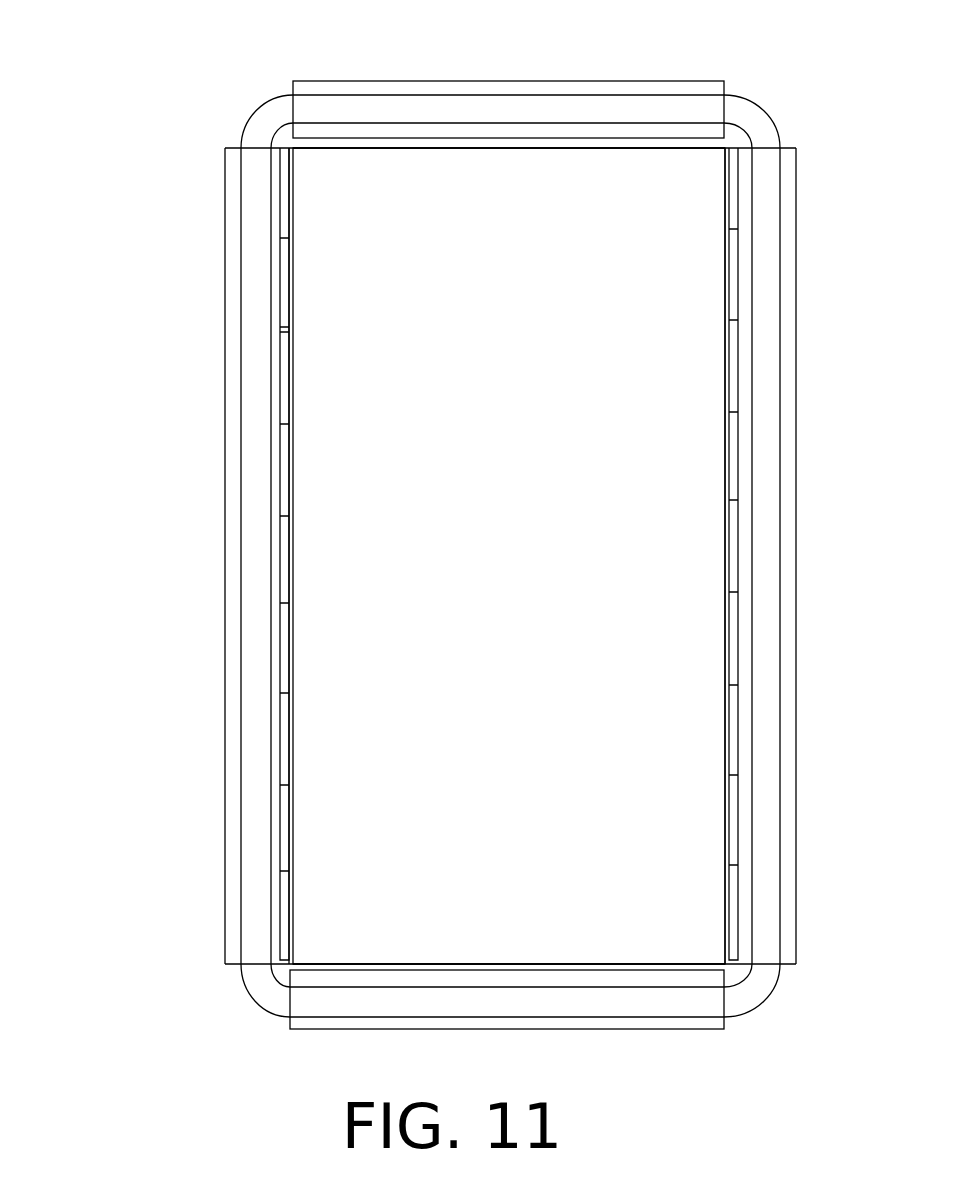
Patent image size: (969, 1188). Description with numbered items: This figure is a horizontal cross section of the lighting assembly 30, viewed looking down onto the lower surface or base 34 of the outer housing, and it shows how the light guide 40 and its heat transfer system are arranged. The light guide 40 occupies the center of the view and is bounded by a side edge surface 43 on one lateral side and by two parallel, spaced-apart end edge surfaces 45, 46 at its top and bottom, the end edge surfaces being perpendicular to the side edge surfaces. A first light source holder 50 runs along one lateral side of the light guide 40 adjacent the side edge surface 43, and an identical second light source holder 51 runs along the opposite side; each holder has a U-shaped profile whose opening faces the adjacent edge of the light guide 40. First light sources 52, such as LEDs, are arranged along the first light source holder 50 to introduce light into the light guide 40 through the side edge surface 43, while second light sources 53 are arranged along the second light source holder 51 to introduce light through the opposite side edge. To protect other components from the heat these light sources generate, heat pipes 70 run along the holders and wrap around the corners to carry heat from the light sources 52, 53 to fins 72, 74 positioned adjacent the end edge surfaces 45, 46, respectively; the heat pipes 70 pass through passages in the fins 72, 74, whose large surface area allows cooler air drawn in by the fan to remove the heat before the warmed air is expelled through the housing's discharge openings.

The lighting assembly 30 is at (98, 140).
The lower surface or base 34 is at (290, 712).
The light guide 40 is at (489, 531).
The side edge surface 43 is at (723, 625).
The end edge surface 45 is at (480, 149).
The end edge surface 46 is at (508, 964).
The first light source holder 50 is at (790, 611).
The second light source holder 51 is at (228, 532).
The first light sources 52 is at (727, 283).
The second light sources 53 is at (289, 280).
The heat pipes 70 is at (261, 123).
The fin 72 is at (509, 81).
The fin 74 is at (655, 1030).